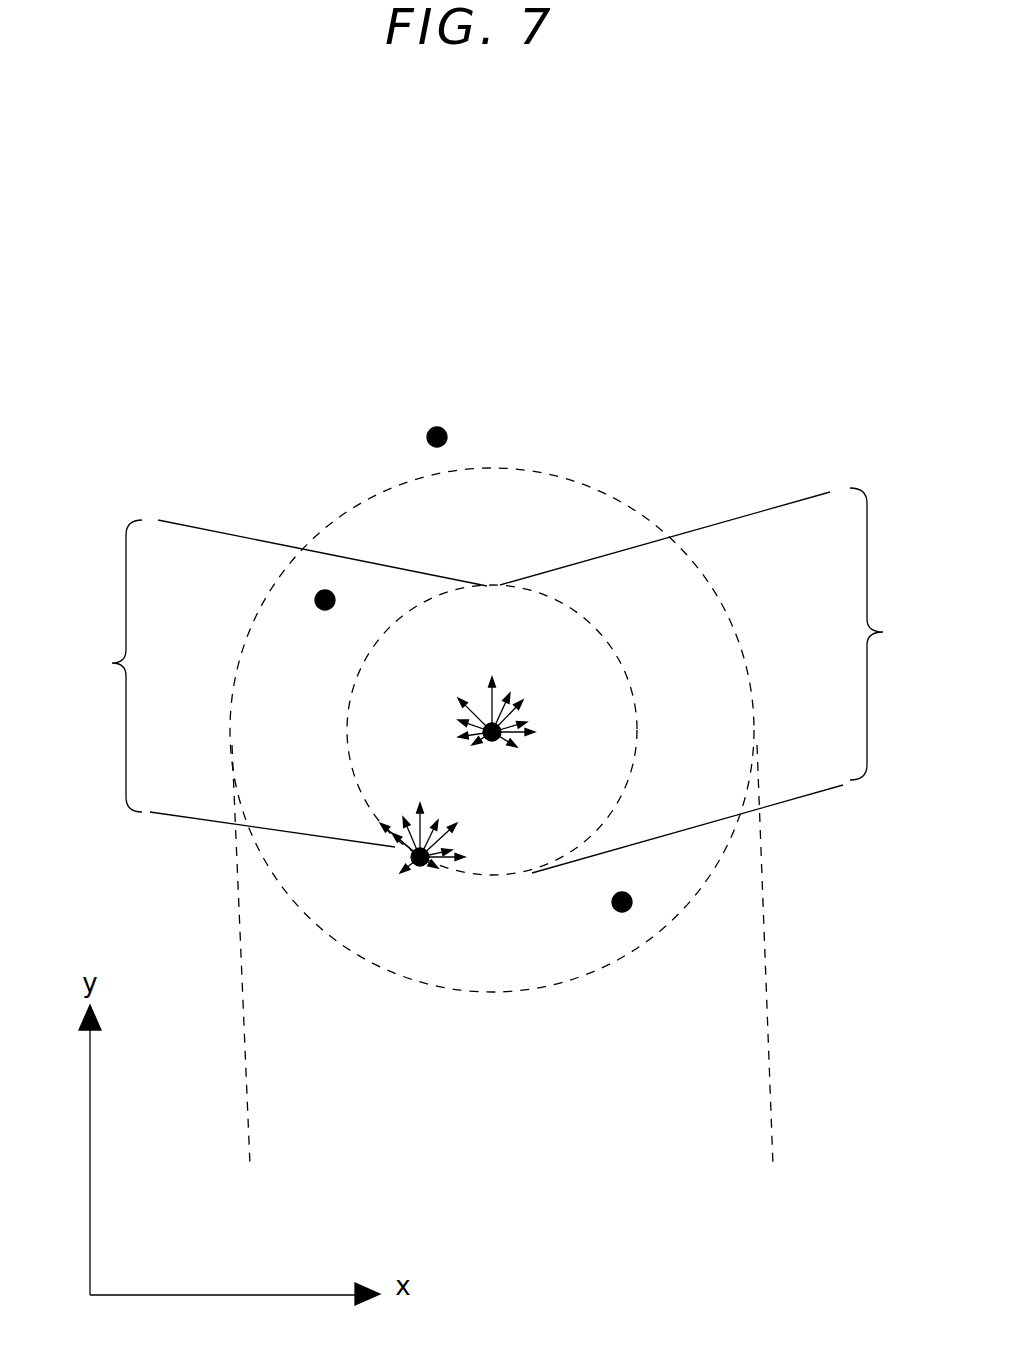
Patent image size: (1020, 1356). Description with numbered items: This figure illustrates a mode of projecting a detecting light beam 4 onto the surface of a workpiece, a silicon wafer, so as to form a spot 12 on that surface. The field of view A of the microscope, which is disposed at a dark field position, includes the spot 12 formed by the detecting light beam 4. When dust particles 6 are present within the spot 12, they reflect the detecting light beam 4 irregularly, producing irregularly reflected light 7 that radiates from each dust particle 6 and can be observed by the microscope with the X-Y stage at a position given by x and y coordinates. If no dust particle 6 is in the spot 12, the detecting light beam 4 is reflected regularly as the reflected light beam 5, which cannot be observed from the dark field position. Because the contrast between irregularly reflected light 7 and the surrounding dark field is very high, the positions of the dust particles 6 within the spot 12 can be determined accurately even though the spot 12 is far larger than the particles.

The detecting light beam 4 is at (706, 680).
The reflected light beam 5 is at (284, 683).
The dust particle 6 is at (495, 745).
The irregularly reflected light 7 is at (470, 737).
The spot 12 is at (575, 610).
The field of view A is at (569, 481).